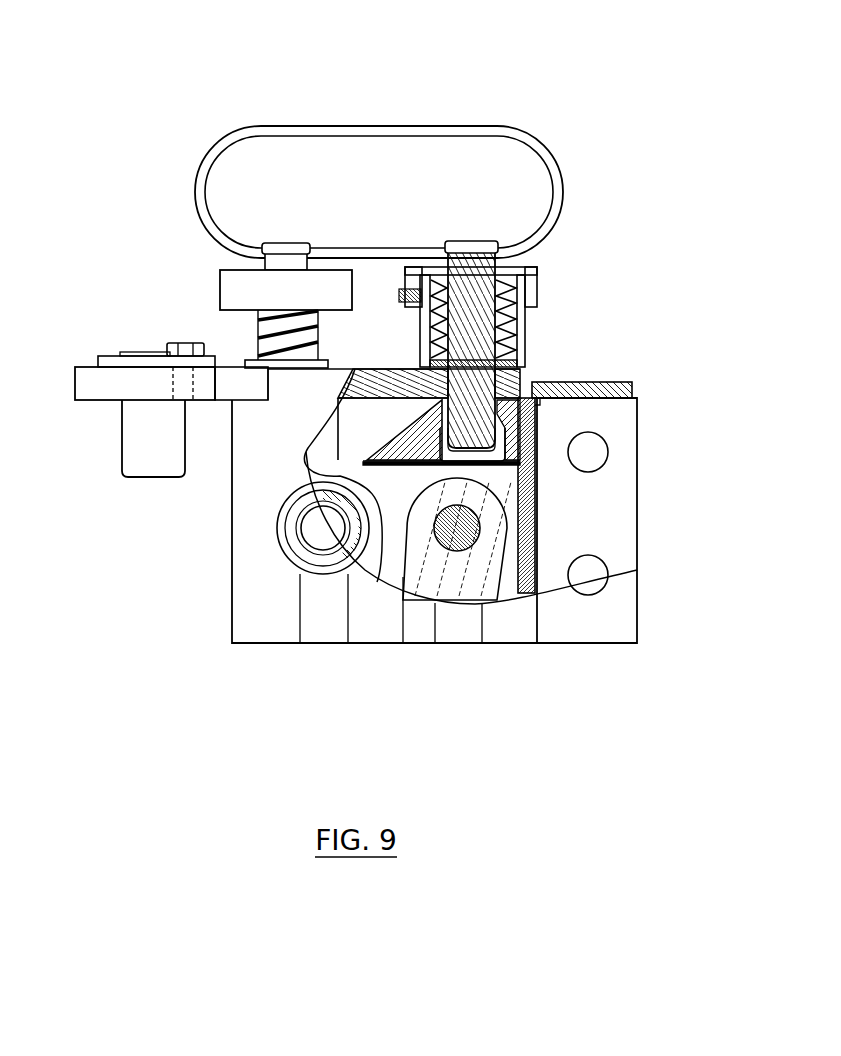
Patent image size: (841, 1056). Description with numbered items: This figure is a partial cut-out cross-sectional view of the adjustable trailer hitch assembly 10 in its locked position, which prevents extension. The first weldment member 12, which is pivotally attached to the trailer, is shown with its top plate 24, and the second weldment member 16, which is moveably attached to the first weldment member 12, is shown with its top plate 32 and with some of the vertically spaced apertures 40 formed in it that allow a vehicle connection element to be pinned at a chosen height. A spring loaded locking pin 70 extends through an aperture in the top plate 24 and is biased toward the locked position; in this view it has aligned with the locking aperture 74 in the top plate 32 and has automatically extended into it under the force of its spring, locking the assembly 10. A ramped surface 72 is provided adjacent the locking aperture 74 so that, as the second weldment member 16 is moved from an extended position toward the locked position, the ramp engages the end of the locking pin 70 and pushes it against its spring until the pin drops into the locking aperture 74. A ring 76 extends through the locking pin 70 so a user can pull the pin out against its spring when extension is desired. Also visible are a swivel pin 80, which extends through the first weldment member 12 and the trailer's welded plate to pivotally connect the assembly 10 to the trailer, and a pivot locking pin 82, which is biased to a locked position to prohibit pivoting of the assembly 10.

The adjustable trailer hitch assembly 10 is at (212, 104).
The ring 76 is at (461, 126).
The pivot locking pin 82 is at (217, 296).
The spring loaded locking pin 70 is at (545, 272).
The top plate 24 is at (394, 378).
The top plate 32 is at (597, 381).
The vertically spaced apertures 40 is at (612, 433).
The ramped surface 72 is at (372, 428).
The swivel pin 80 is at (150, 434).
The locking aperture 74 is at (512, 468).
The second weldment member 16 is at (612, 533).
The first weldment member 12 is at (255, 582).